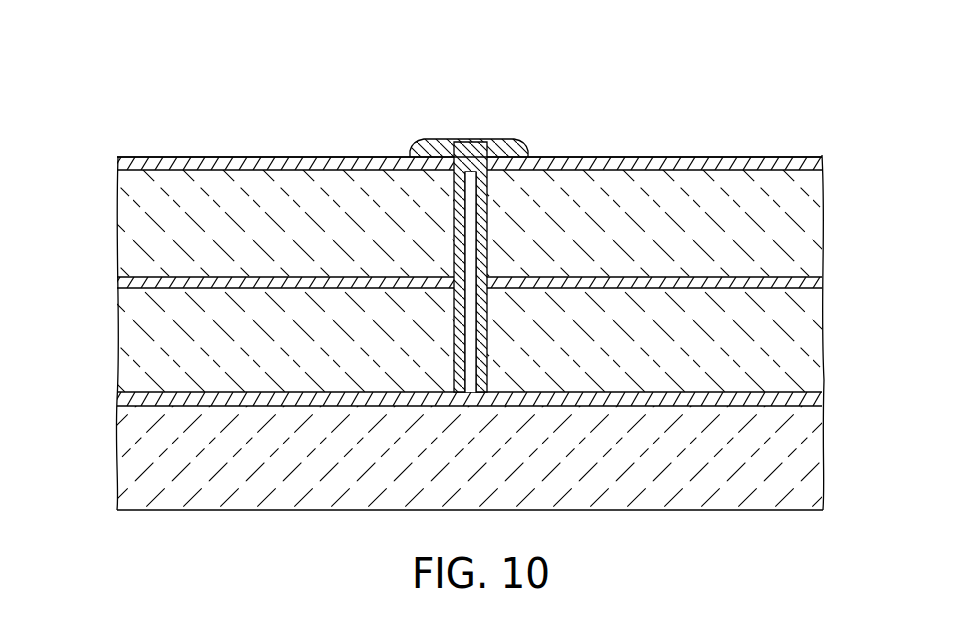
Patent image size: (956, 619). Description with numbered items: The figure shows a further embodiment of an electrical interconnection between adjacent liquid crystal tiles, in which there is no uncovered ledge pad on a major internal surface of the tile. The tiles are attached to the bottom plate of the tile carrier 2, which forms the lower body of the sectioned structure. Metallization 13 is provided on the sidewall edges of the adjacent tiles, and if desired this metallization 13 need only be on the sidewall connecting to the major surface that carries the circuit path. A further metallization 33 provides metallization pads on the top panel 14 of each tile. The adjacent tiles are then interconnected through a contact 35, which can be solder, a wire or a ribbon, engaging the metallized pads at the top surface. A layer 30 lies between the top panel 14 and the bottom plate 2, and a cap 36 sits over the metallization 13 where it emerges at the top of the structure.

The bottom plate of the tile carrier 2 is at (709, 461).
The metallization 13 is at (482, 240).
The top panel 14 is at (712, 238).
The dielectric layer 30 is at (712, 349).
The metallization 33 is at (412, 148).
The contact 35 is at (158, 158).
The cap / bump 36 is at (470, 138).